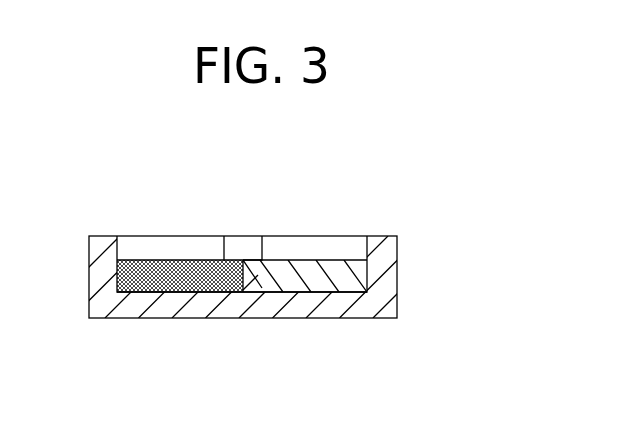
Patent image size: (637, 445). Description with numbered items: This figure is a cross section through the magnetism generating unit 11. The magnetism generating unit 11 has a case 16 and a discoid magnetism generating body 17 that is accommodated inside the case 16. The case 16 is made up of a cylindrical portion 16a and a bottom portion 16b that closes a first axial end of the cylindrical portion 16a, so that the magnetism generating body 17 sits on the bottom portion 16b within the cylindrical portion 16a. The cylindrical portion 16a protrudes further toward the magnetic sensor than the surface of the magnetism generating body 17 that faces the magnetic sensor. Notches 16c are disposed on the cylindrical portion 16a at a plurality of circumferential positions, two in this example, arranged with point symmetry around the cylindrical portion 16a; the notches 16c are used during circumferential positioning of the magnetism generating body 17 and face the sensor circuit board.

The magnetism generating unit 11 is at (355, 223).
The case 16 is at (397, 255).
The cylindrical portion 16a is at (155, 237).
The bottom portion 16b is at (272, 300).
The notches 16c is at (247, 237).
The magnetism generating body 17 is at (307, 258).